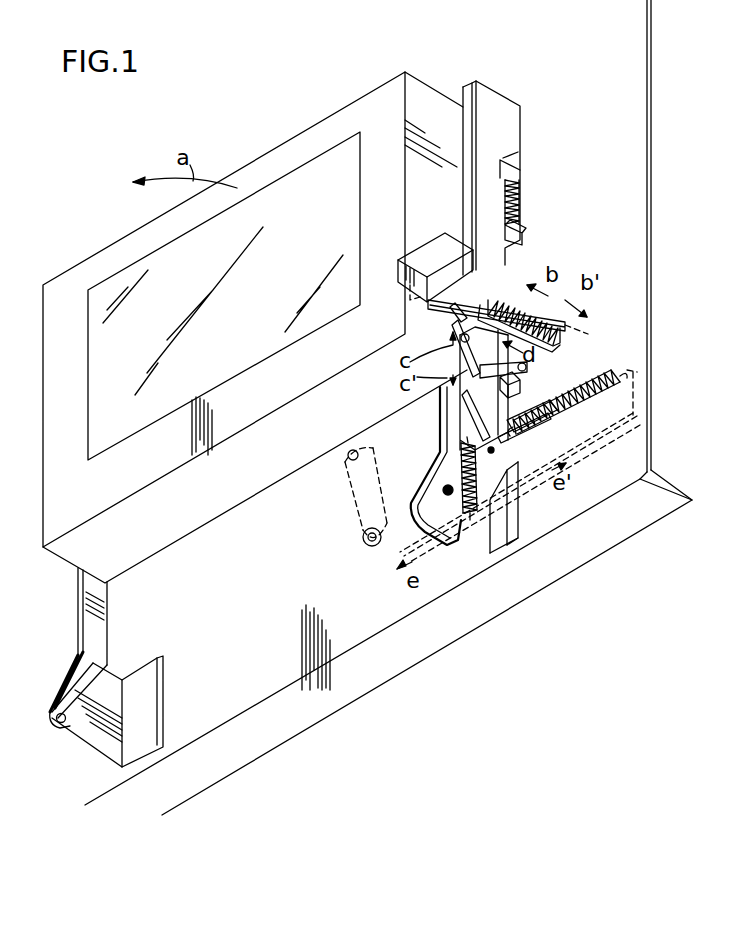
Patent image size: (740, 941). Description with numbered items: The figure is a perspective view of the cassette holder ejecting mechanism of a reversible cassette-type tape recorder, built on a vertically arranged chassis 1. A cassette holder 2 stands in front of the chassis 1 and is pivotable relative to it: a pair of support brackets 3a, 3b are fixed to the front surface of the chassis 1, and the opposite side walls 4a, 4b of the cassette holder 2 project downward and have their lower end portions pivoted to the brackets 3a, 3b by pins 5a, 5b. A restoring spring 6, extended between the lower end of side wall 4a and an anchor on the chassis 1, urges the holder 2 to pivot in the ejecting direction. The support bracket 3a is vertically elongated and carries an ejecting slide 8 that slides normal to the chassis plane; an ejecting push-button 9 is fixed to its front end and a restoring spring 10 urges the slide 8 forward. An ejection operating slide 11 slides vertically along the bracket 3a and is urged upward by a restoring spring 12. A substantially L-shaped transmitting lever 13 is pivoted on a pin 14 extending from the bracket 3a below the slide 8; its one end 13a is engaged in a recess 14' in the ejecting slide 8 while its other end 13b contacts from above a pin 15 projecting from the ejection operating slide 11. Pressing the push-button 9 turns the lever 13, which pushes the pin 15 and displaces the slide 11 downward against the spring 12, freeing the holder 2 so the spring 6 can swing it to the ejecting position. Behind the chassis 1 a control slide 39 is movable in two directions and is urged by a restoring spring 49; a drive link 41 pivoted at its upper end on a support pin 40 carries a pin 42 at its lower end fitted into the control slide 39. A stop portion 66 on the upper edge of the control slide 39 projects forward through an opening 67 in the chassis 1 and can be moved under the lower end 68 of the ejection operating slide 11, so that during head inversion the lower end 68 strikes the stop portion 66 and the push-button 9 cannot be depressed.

The chassis 1 is at (550, 567).
The cassette holder 2 is at (335, 130).
The support bracket 3a is at (519, 506).
The support bracket 3b is at (102, 735).
The side wall 4a is at (440, 458).
The side wall 4b is at (97, 625).
The pin 5a is at (446, 497).
The pin 5b is at (54, 727).
The restoring spring 6 is at (478, 512).
The ejecting slide 8 is at (562, 329).
The ejecting push-button 9 is at (420, 248).
The restoring spring 10 is at (450, 400).
The ejection operating slide 11 is at (487, 214).
The restoring spring 12 is at (517, 187).
The transmitting lever 13 is at (528, 372).
The end of transmitting lever 13a is at (460, 338).
The end of transmitting lever 13b is at (540, 360).
The pin 14 is at (448, 380).
The recess 14' is at (414, 305).
The pin 15 is at (520, 392).
The control slide 39 is at (627, 410).
The support pin 40 is at (349, 462).
The drive link 41 is at (356, 505).
The pin 42 is at (365, 546).
The restoring spring 49 is at (632, 392).
The stop portion 66 is at (548, 418).
The opening 67 is at (505, 463).
The lower end 68 is at (491, 453).